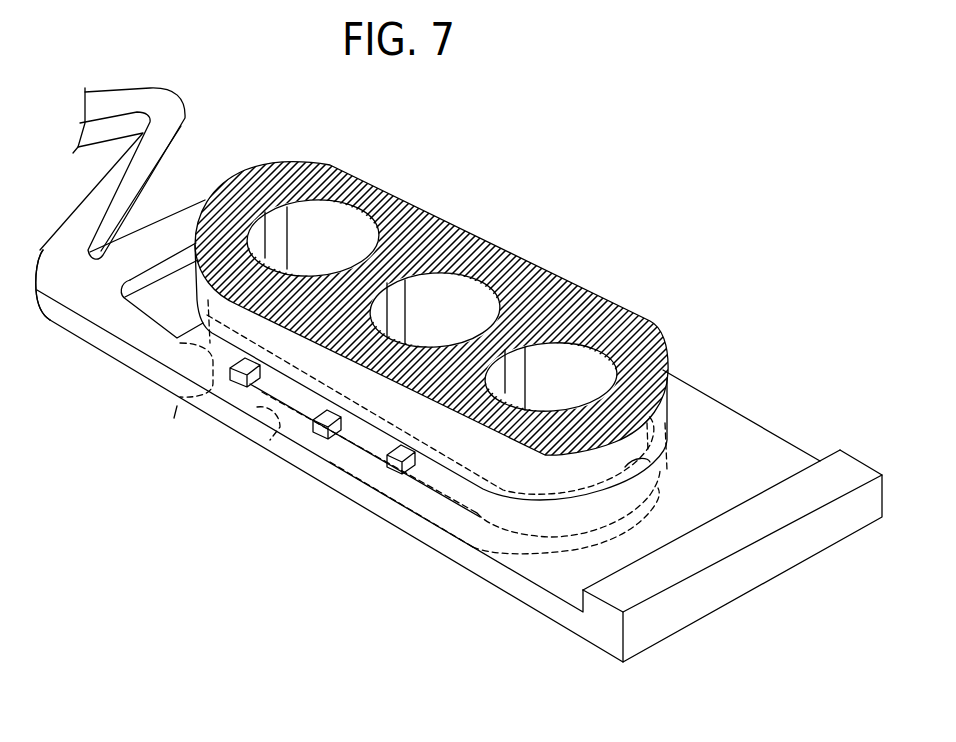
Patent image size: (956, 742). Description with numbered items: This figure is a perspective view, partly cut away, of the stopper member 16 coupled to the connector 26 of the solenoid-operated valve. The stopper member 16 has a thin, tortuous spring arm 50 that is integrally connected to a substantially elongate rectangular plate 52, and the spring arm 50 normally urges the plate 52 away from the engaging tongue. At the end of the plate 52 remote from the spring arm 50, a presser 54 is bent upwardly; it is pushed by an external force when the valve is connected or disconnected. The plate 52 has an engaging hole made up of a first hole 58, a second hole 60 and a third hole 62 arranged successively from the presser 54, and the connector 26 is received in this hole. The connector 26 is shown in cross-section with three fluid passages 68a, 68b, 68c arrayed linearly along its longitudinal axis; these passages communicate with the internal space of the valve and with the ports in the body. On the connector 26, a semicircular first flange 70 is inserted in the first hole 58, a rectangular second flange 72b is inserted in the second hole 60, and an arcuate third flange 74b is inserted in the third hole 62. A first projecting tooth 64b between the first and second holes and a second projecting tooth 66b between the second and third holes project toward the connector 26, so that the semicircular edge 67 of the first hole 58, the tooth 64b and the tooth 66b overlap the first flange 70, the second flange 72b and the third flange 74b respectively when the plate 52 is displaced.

The stopper member 16 is at (758, 410).
The connector 26 is at (663, 413).
The spring arm 50 is at (172, 112).
The plate 52 is at (60, 264).
The presser 54 is at (683, 613).
The first hole 58 is at (408, 477).
The second hole 60 is at (290, 407).
The third hole 62 is at (160, 300).
The first projecting tooth 64b is at (357, 430).
The second projecting tooth 66b is at (197, 343).
The semicircular edge 67 is at (660, 473).
The fluid passage 68a is at (548, 350).
The fluid passage 68b is at (432, 283).
The fluid passage 68c is at (304, 230).
The first flange 70 is at (522, 547).
The second flange 72b is at (328, 493).
The third flange 74b is at (164, 421).